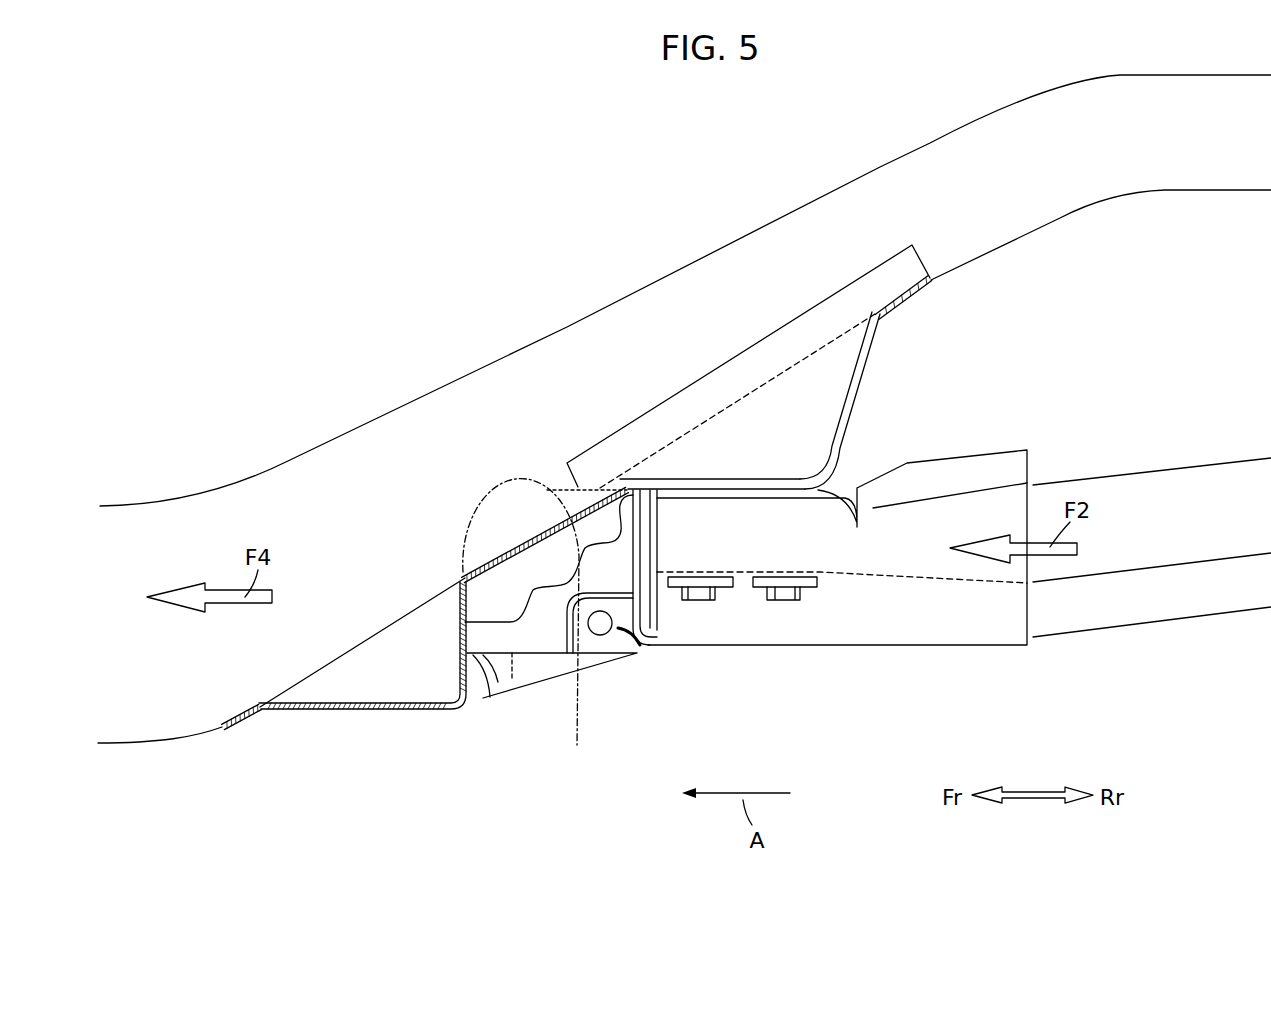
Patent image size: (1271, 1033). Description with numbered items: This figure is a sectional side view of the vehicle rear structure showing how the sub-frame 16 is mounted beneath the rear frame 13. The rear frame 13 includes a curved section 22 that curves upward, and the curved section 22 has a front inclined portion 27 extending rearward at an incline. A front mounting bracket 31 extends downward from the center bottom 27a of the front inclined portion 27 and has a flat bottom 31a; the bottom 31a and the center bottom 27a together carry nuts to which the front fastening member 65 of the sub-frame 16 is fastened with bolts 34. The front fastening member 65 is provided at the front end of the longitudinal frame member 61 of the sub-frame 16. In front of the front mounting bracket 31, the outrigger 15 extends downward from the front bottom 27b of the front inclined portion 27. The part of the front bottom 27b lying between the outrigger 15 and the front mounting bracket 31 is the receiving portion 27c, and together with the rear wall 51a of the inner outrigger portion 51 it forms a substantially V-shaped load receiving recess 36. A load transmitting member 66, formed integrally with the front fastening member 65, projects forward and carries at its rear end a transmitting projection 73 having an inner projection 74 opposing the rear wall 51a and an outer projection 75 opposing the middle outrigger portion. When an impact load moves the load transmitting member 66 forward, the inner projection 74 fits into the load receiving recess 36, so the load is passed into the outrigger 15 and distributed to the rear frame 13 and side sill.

The rear frame 13 is at (666, 232).
The curved section 22 is at (947, 142).
The front inclined portion 27 is at (565, 340).
The center bottom of the front inclined portion 27a is at (907, 303).
The front bottom of the front inclined portion 27b is at (340, 657).
The receiving portion 27c is at (534, 623).
The front mounting bracket 31 is at (852, 390).
The bottom of the front mounting bracket 31a is at (717, 482).
The bolt 34 is at (780, 600).
The load receiving recess 36 is at (609, 758).
The rear wall of the inner outrigger portion 51a is at (493, 697).
The longitudinal frame member 61 is at (1127, 492).
The front fastening member 65 is at (817, 578).
The load transmitting member 66 is at (637, 645).
The transmitting projection 73 is at (497, 413).
The inner projection 74 is at (552, 492).
The outer projection 75 is at (486, 530).
The outrigger 15 is at (373, 710).
The inner outrigger portion 51 is at (282, 692).
The sub-frame 16 is at (1125, 627).